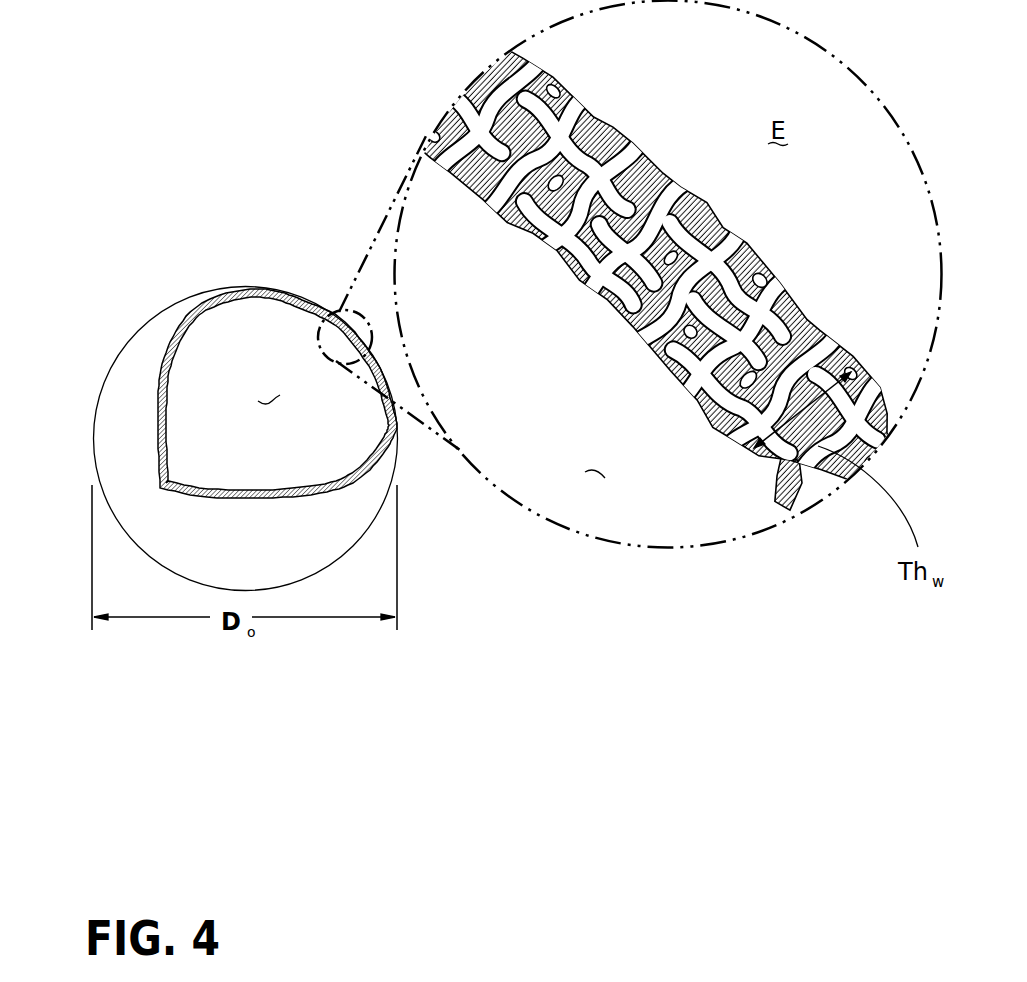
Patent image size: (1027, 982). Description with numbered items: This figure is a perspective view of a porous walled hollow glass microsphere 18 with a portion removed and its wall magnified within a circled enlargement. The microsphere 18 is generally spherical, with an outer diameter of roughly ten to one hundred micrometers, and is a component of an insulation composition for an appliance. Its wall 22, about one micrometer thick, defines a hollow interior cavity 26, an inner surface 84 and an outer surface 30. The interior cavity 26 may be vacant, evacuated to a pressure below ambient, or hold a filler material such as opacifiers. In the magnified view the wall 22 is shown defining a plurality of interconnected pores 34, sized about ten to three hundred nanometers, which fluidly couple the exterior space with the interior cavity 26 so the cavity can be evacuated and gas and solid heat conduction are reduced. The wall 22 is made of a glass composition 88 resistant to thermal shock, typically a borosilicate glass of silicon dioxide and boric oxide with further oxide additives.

The porous walled hollow glass microsphere 18 is at (192, 171).
The wall 22 is at (164, 340).
The interior cavity 26 is at (268, 395).
The outer surface 30 is at (125, 420).
The pores 34 is at (535, 232).
The inner surface 84 is at (725, 424).
The glass composition 88 is at (335, 513).